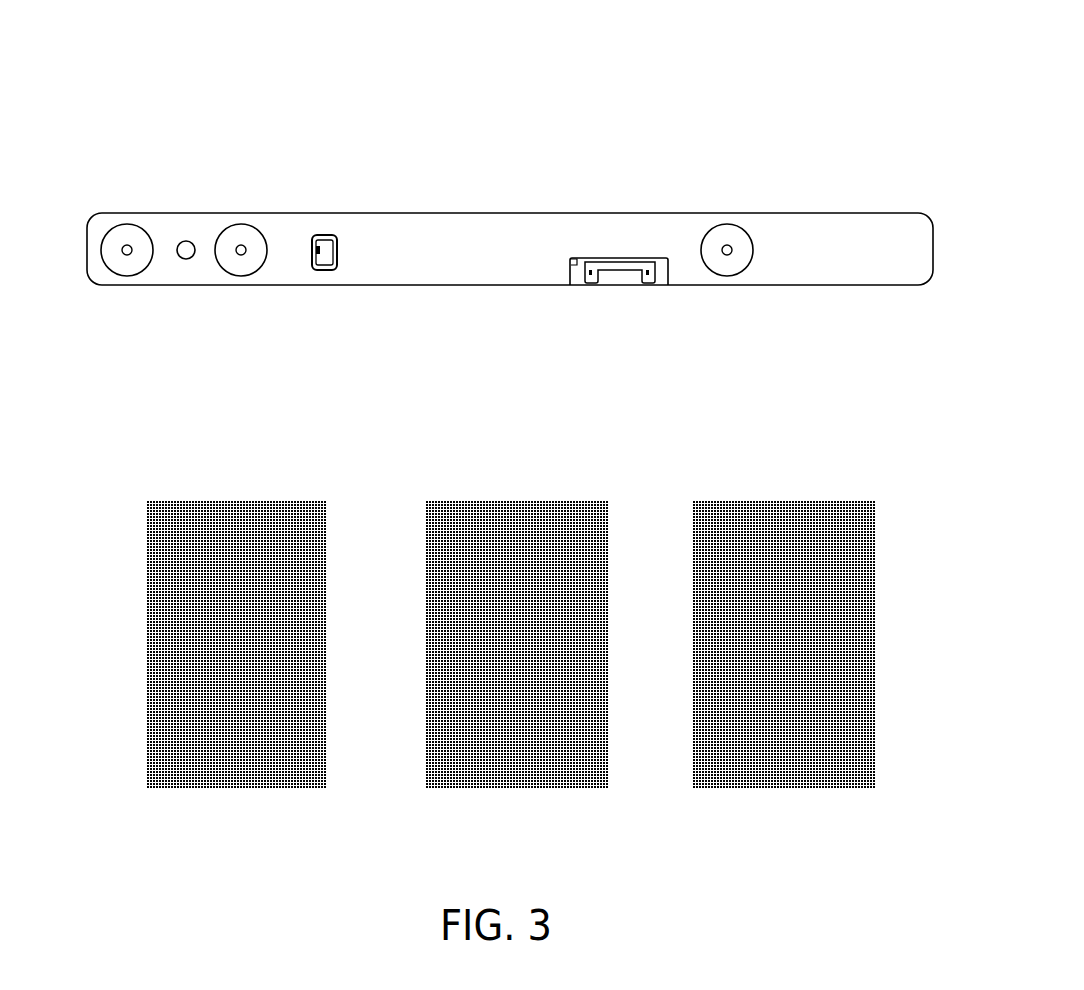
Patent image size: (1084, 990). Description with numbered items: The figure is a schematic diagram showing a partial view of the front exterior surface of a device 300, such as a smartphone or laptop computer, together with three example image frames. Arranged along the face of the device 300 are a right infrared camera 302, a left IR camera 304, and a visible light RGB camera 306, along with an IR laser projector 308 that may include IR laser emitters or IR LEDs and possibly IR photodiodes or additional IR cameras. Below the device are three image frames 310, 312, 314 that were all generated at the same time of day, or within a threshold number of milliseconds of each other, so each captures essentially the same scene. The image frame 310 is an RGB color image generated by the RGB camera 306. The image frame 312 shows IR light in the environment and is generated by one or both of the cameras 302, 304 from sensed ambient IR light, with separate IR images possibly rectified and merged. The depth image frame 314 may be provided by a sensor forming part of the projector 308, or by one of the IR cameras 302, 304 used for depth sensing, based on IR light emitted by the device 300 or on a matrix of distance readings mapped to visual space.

The device 300 is at (782, 40).
The right infrared (IR) camera 302 is at (127, 218).
The left IR camera 304 is at (713, 183).
The visible light/red green blue (RGB) camera 306 is at (243, 283).
The IR laser projector 308 is at (312, 180).
The image frame 310 is at (245, 817).
The image frame 312 is at (523, 815).
The depth image frame 314 is at (792, 815).